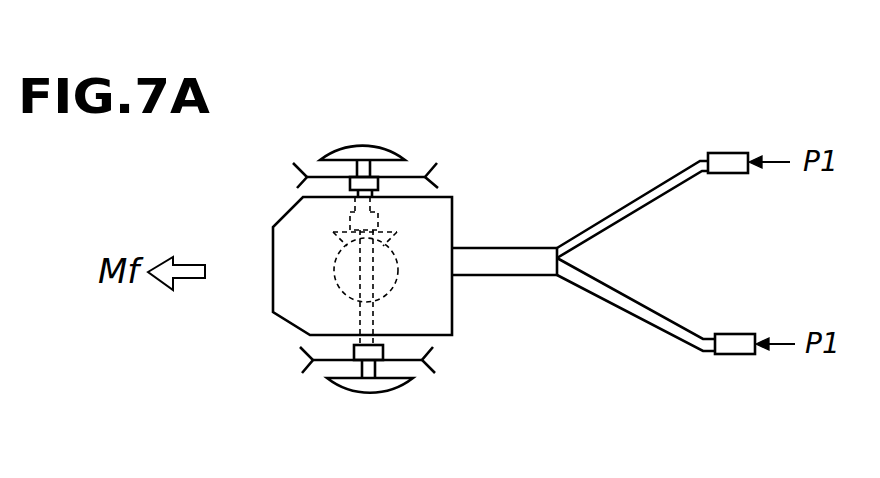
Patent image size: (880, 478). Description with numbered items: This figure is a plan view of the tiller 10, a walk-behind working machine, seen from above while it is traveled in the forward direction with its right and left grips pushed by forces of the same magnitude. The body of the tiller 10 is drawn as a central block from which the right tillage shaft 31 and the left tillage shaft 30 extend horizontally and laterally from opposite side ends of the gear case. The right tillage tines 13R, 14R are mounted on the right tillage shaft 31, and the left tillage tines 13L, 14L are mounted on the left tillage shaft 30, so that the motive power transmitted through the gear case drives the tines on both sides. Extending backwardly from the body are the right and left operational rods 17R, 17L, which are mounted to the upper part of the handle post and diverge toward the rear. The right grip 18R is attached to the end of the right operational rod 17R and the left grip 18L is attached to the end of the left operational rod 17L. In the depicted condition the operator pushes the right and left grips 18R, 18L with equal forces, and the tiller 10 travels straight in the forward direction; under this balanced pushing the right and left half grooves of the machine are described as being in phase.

The tiller 10 is at (267, 353).
The right tillage tine 13R is at (440, 146).
The right tillage tine 14R is at (430, 178).
The left tillage tine 13L is at (453, 369).
The left tillage tine 14L is at (424, 362).
The right operational rod 17R is at (668, 175).
The left operational rod 17L is at (677, 338).
The right grip 18R is at (727, 163).
The left grip 18L is at (737, 348).
The left tillage shaft 30 is at (367, 342).
The right tillage shaft 31 is at (372, 192).